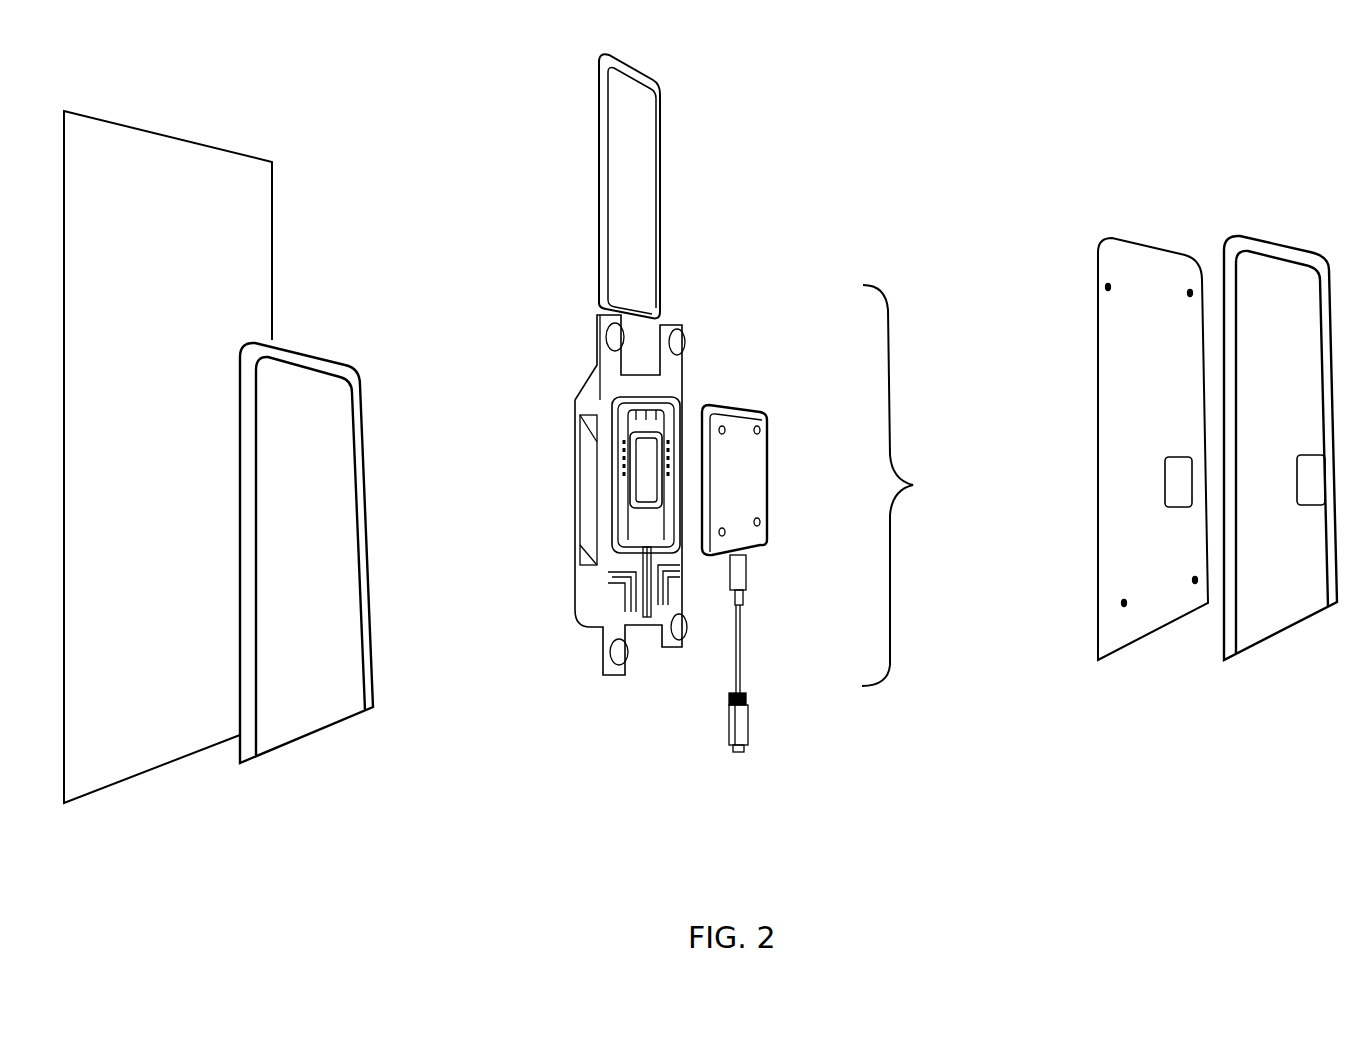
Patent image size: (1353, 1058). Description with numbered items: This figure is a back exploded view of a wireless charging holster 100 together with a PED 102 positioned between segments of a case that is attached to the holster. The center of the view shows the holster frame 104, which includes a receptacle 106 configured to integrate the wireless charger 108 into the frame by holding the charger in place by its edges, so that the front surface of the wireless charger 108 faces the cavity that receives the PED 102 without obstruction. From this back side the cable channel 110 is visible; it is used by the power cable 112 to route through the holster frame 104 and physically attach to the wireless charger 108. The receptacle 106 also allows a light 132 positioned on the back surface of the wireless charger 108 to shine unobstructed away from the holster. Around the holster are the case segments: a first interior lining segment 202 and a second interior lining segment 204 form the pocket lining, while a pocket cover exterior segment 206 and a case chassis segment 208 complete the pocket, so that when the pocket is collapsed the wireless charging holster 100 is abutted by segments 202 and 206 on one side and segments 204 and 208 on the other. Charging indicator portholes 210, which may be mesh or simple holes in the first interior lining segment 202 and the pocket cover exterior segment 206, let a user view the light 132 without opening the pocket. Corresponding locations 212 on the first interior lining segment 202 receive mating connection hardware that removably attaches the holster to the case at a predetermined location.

The wireless charging holster 100 is at (913, 485).
The PED 102 is at (640, 188).
The holster frame 104 is at (635, 390).
The receptacle 106 is at (650, 455).
The wireless charger 108 is at (730, 422).
The cable channel 110 is at (648, 617).
The power cable 112 is at (740, 672).
The light 132 is at (760, 530).
The first interior lining segment 202 is at (1138, 262).
The second interior lining segment 204 is at (315, 382).
The pocket cover exterior segment 206 is at (1252, 630).
The case chassis segment 208 is at (228, 180).
The charging indicator portholes 210 is at (1178, 488).
The locations 212 is at (1190, 293).